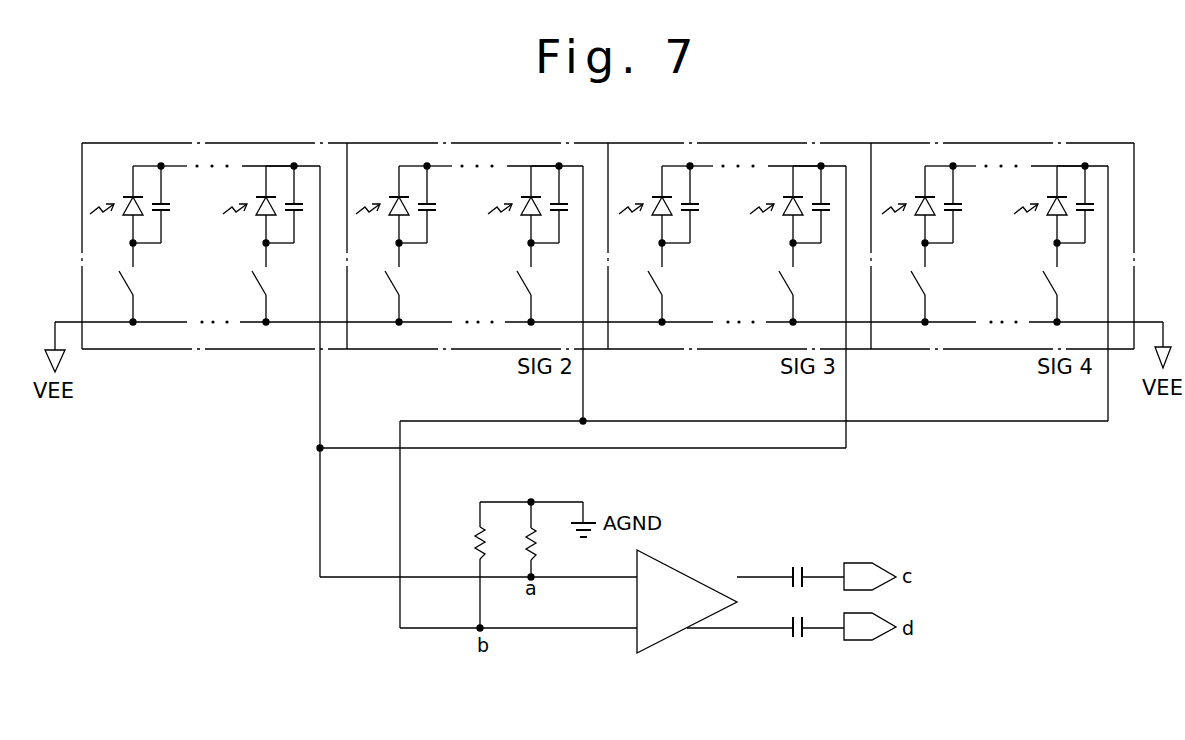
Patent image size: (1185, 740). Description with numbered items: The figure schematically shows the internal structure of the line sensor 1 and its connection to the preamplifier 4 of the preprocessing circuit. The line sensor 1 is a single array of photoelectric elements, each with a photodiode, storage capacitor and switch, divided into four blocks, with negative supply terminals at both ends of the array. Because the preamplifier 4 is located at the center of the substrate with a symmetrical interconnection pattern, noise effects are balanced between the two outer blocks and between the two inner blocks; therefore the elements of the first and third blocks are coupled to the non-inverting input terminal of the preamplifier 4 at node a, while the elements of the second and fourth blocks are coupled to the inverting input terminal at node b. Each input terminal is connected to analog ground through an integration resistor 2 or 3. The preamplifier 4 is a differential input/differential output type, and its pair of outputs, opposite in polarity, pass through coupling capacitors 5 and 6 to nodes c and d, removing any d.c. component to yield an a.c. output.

The line sensor 1 is at (233, 341).
The integration resistor 2 is at (524, 547).
The integration resistor 3 is at (472, 544).
The preamplifier 4 is at (682, 570).
The coupling capacitor 5 is at (798, 562).
The coupling capacitor 6 is at (798, 640).